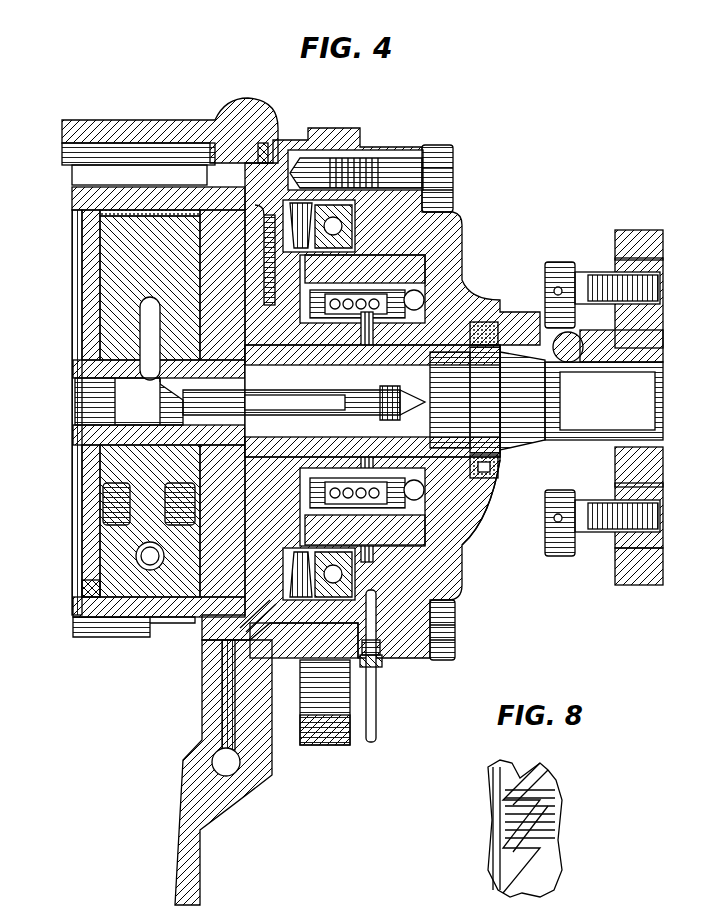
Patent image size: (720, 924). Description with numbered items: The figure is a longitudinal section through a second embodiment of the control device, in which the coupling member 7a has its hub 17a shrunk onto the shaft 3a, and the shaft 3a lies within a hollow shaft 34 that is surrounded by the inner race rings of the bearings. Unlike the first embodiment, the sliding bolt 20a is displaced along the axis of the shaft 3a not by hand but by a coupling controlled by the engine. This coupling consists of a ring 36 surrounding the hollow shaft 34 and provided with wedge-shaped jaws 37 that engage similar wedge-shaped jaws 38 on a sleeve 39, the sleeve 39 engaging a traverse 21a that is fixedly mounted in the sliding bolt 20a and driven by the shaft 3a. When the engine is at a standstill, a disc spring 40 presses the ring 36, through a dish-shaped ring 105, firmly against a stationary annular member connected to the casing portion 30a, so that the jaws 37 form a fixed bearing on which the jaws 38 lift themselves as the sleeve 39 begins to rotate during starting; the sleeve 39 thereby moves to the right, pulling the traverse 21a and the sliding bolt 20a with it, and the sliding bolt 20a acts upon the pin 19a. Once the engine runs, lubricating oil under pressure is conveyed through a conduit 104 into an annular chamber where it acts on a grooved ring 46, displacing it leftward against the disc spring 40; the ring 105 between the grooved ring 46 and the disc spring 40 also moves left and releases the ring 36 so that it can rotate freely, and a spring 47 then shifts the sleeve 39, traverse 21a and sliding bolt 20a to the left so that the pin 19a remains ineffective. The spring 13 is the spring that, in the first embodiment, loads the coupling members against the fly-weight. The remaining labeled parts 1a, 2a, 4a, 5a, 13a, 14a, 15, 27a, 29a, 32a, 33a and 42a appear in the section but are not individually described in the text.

In FIG. 4, the cap 5a is at (175, 120).
In FIG. 4, the gasket 14a is at (112, 216).
In FIG. 4, the side plate 1a is at (108, 278).
In FIG. 4, the hollow shaft 34 is at (172, 285).
In FIG. 4, the pin 19a is at (130, 332).
In FIG. 4, the sliding bolt 20a is at (120, 398).
In FIG. 4, the hub 17a is at (100, 455).
In FIG. 4, the lower block 27a is at (168, 390).
In FIG. 4, the side plate lower 13a is at (108, 550).
In FIG. 4, the coupling member 7a is at (100, 572).
In FIG. 4, the base flange 4a is at (92, 637).
In FIG. 4, the spring 47 is at (385, 278).
In FIG. 4, the ring 36 is at (268, 290).
In FIG. 8, the ring 36 is at (492, 858).
In FIG. 4, the disc spring 40 is at (292, 218).
In FIG. 4, the wedge-shaped jaws 37 is at (362, 289).
In FIG. 8, the wedge-shaped jaws 37 is at (498, 805).
In FIG. 4, the bearing 42a is at (338, 282).
In FIG. 4, the sleeve 39 is at (351, 437).
In FIG. 4, the spring 13 is at (318, 416).
In FIG. 4, the traverse 21a is at (380, 420).
In FIG. 4, the shaft 3a is at (514, 368).
In FIG. 4, the seal 33a is at (496, 468).
In FIG. 4, the flange 2a is at (615, 344).
In FIG. 4, the housing wall 29a is at (462, 535).
In FIG. 4, the wedge-shaped jaws 38 is at (362, 510).
In FIG. 8, the wedge-shaped jaws 38 is at (540, 792).
In FIG. 4, the member 15 is at (365, 533).
In FIG. 4, the dish-shaped ring 105 is at (278, 565).
In FIG. 4, the grooved ring 46 is at (310, 615).
In FIG. 4, the bolt 32a is at (400, 655).
In FIG. 4, the conduit 104 is at (376, 715).
In FIG. 4, the casing portion 30a is at (320, 665).